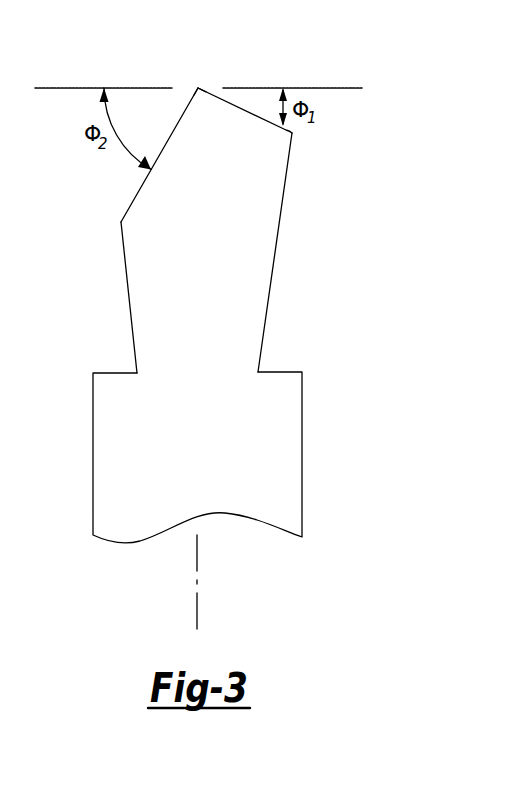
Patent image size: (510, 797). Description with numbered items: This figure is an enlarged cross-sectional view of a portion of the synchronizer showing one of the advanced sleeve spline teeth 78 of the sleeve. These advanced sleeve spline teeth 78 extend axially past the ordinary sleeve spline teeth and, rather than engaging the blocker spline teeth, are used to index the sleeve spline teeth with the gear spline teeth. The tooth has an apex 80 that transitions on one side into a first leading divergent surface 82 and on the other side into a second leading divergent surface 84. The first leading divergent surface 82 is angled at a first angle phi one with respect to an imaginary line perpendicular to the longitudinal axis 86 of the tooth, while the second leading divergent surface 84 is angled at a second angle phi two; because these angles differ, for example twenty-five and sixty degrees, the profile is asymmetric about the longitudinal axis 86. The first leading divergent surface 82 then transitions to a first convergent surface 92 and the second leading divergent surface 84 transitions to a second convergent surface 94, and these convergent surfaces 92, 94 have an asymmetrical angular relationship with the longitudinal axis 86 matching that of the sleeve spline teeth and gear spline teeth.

The advanced sleeve spline tooth 78 is at (303, 422).
The apex 80 is at (198, 86).
The first leading divergent surface 82 is at (292, 132).
The second leading divergent surface 84 is at (142, 186).
The longitudinal axis 86 is at (197, 617).
The first convergent surface 92 is at (269, 293).
The second convergent surface 94 is at (131, 322).